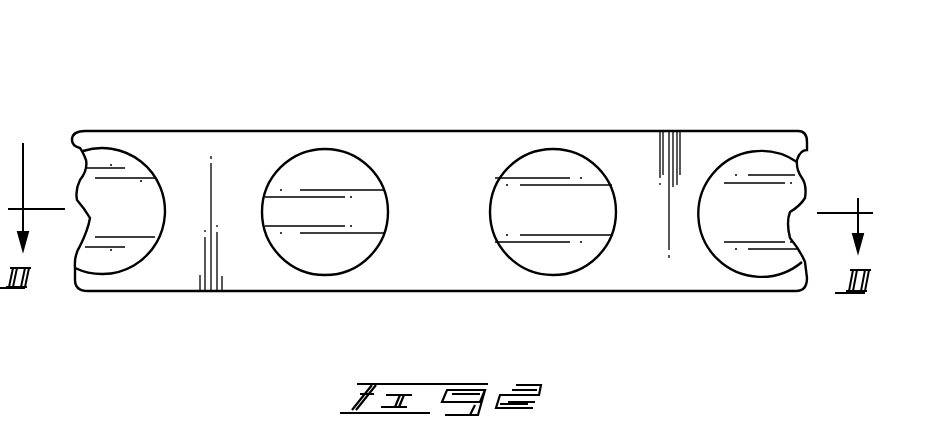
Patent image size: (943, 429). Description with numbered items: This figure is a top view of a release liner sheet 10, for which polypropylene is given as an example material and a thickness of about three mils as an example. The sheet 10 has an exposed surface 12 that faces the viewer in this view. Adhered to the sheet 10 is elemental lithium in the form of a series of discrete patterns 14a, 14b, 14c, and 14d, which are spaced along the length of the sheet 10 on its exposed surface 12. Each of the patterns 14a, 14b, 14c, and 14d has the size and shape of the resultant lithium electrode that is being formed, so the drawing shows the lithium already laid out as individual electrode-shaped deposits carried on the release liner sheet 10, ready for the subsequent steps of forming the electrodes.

The release liner sheet 10 is at (442, 170).
The exposed surface 12 is at (190, 168).
The discrete pattern 14a is at (122, 170).
The discrete pattern 14b is at (322, 170).
The discrete pattern 14c is at (553, 168).
The discrete pattern 14d is at (752, 175).